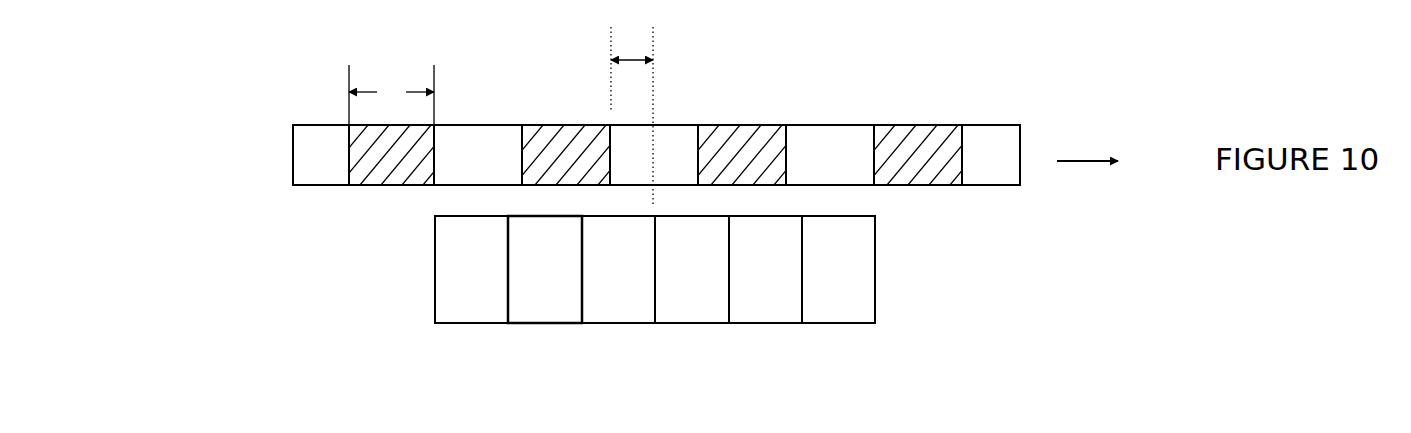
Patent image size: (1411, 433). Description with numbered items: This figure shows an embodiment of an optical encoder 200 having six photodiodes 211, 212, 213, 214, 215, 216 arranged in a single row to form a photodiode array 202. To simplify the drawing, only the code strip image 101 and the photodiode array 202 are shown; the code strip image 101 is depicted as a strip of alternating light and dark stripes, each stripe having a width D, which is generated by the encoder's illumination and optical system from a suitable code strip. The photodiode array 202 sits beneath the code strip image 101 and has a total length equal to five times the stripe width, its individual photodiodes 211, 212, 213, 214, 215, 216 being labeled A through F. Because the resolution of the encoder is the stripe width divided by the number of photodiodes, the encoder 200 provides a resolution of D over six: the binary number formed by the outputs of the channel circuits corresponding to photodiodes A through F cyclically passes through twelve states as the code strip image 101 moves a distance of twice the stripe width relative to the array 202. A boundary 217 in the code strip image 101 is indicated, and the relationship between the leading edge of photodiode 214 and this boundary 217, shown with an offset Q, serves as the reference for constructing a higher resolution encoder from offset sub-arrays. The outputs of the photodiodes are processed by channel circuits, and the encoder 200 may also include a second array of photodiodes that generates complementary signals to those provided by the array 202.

The encoder 200 is at (214, 129).
The code strip image 101 is at (972, 125).
The boundary 217 is at (610, 145).
The photodiode array 202 is at (438, 298).
The photodiode 211 is at (470, 318).
The photodiode 212 is at (548, 318).
The photodiode 213 is at (610, 318).
The photodiode 214 is at (690, 318).
The photodiode 215 is at (770, 318).
The photodiode 216 is at (843, 318).